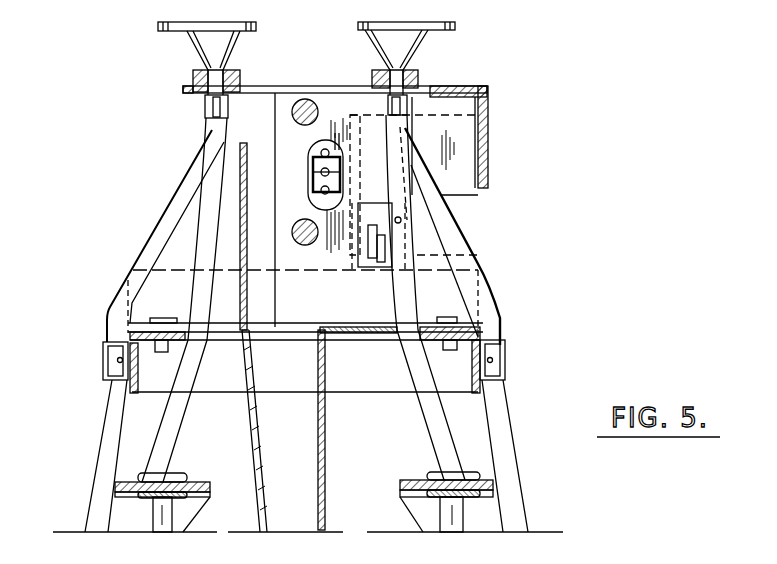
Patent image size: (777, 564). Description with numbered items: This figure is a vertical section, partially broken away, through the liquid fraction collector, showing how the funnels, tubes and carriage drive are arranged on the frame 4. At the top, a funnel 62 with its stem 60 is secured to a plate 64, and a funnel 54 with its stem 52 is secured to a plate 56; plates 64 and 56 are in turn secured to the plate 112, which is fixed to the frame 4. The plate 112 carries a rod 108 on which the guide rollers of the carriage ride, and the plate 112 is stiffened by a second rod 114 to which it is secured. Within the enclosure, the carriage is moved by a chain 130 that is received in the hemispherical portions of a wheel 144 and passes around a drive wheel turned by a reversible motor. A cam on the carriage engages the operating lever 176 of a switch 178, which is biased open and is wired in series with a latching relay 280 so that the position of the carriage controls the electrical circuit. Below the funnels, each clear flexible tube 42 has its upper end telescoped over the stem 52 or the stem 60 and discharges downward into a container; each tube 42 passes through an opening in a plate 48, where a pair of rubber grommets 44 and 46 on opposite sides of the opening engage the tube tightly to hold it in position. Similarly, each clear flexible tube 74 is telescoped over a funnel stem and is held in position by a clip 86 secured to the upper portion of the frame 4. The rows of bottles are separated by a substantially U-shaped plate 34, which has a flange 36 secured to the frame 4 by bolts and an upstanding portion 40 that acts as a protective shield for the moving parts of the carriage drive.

The plate 112 is at (335, 100).
The funnel 62 is at (200, 42).
The plate 64 is at (193, 77).
The stem 60 is at (215, 105).
The funnel 54 is at (422, 47).
The plate 56 is at (418, 78).
The stem 52 is at (400, 105).
The latching relay 280 is at (465, 152).
The upstanding portion 40 is at (238, 163).
The rod 108 is at (292, 113).
The second rod 114 is at (292, 231).
The chain 130 is at (311, 185).
The wheel 144 is at (310, 183).
The operating lever 176 is at (367, 247).
The switch 178 is at (378, 267).
The flexible tube 74 is at (152, 243).
The flexible tube 42 is at (180, 420).
The flange 36 is at (350, 330).
The U-shaped plate 34 is at (323, 477).
The clip 86 is at (103, 362).
The frame 4 is at (132, 404).
The plate 48 is at (205, 483).
The rubber grommet 44 is at (433, 473).
The rubber grommet 46 is at (433, 498).